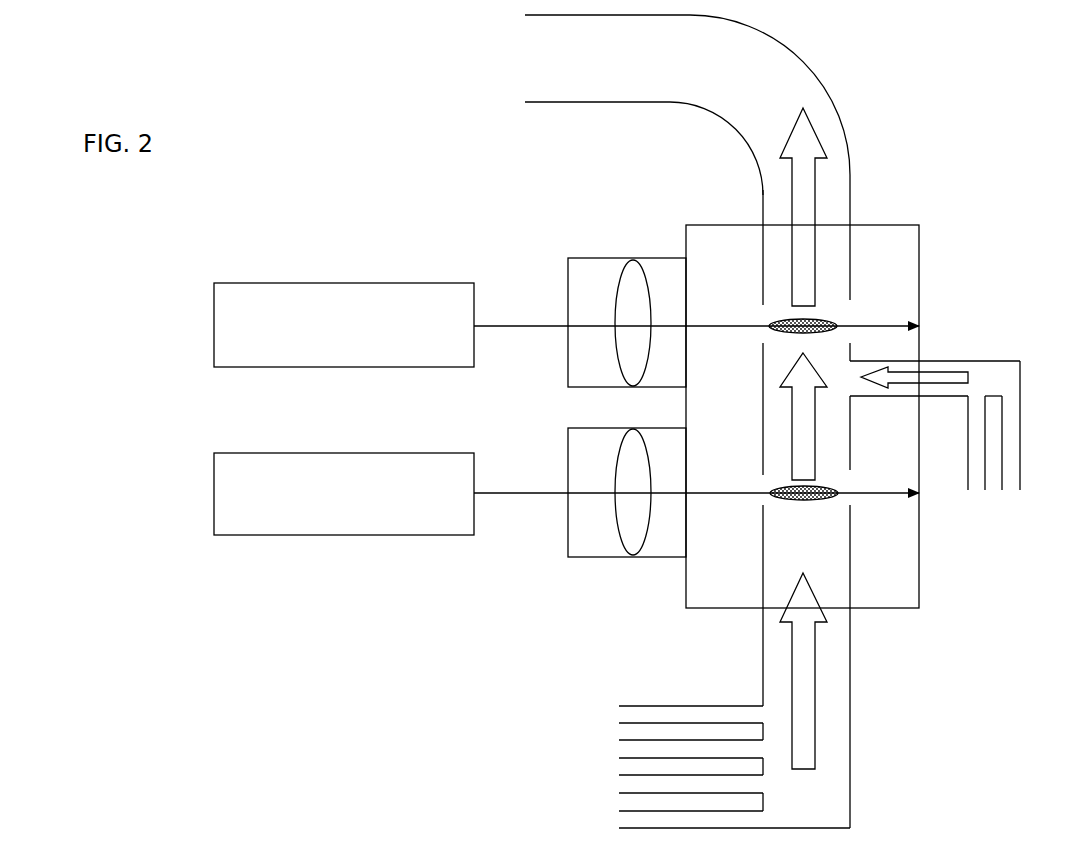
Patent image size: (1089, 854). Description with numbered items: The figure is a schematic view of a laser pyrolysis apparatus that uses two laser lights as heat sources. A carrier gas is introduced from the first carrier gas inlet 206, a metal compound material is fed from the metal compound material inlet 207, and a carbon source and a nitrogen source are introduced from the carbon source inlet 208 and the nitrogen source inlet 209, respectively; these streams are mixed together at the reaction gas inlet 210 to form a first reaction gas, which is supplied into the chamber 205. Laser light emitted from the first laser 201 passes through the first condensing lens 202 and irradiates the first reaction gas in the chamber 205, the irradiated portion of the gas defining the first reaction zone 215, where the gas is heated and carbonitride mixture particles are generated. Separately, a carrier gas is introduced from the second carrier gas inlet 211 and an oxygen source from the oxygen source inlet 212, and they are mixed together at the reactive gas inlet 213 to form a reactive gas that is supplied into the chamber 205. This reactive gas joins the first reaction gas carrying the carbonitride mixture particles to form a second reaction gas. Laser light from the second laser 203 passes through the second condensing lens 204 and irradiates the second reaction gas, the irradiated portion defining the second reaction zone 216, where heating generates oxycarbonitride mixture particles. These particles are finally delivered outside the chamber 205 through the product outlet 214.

The first laser 201 is at (344, 522).
The first condensing lens 202 is at (627, 514).
The second laser 203 is at (344, 350).
The second condensing lens 204 is at (627, 342).
The chamber 205 is at (802, 416).
The first carrier gas inlet 206 is at (618, 712).
The metal compound material inlet 207 is at (618, 748).
The carbon source inlet 208 is at (618, 783).
The nitrogen source inlet 209 is at (618, 820).
The reaction gas inlet 210 is at (847, 468).
The second carrier gas inlet 211 is at (975, 494).
The oxygen source inlet 212 is at (1012, 494).
The reactive gas inlet 213 is at (948, 366).
The product outlet 214 is at (687, 105).
The first reaction zone 215 is at (815, 505).
The second reaction zone 216 is at (832, 320).